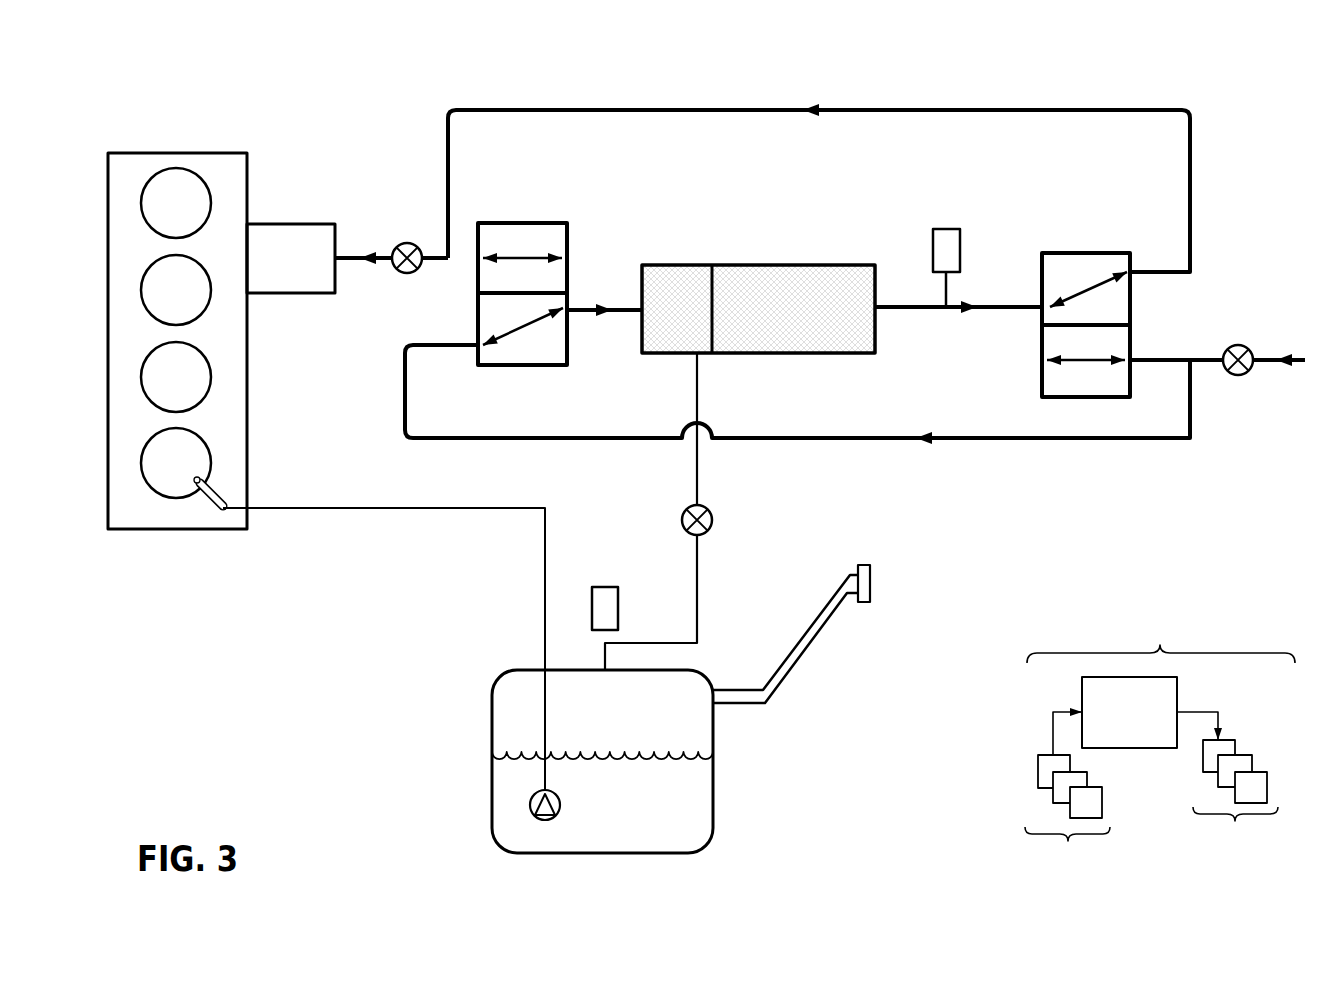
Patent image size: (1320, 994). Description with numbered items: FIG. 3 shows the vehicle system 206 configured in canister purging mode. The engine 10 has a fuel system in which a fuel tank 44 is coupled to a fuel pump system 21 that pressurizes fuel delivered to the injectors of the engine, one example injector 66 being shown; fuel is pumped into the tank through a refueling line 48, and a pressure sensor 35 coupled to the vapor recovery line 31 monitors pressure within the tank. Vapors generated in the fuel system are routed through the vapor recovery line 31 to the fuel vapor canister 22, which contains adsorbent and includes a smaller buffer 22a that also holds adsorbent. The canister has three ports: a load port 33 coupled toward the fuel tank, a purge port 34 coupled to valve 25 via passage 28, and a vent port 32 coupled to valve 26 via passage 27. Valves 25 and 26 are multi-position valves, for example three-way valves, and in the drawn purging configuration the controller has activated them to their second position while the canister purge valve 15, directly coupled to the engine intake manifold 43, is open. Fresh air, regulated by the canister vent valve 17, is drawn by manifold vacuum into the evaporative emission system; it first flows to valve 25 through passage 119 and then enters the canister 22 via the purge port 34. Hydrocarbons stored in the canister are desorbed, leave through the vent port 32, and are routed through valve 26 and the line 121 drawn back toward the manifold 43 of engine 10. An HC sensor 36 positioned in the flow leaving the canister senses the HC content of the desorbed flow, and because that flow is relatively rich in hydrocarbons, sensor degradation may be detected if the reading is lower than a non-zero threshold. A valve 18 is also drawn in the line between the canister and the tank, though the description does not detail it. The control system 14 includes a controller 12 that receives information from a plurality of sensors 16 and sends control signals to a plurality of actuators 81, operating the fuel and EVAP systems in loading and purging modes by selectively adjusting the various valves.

The engine 10 is at (225, 153).
The engine intake manifold 43 is at (300, 224).
The canister purge valve 15 is at (412, 243).
The bypass passage 121 is at (717, 110).
The valve 25 is at (530, 223).
The passage 28 is at (592, 306).
The fuel vapor canister 22 is at (758, 291).
The buffer 22a is at (668, 265).
The purge port 34 is at (638, 315).
The vent port 32 is at (880, 310).
The passage 27 is at (950, 310).
The HC sensor 36 is at (935, 229).
The valve 26 is at (1088, 253).
The canister vent valve 17 is at (1243, 345).
The passage 119 is at (940, 441).
The load port 33 is at (700, 356).
The valve 18 is at (711, 516).
The vapor recovery line 31 is at (700, 601).
The pressure sensor 35 is at (612, 587).
The fuel tank 44 is at (716, 818).
The fuel pump system 21 is at (560, 802).
The refueling line 48 is at (782, 673).
The injector 66 is at (217, 482).
The vehicle system 206 is at (288, 660).
The control system 14 is at (1160, 742).
The controller 12 is at (1129, 712).
The sensors 16 is at (1067, 796).
The actuators 81 is at (1227, 789).